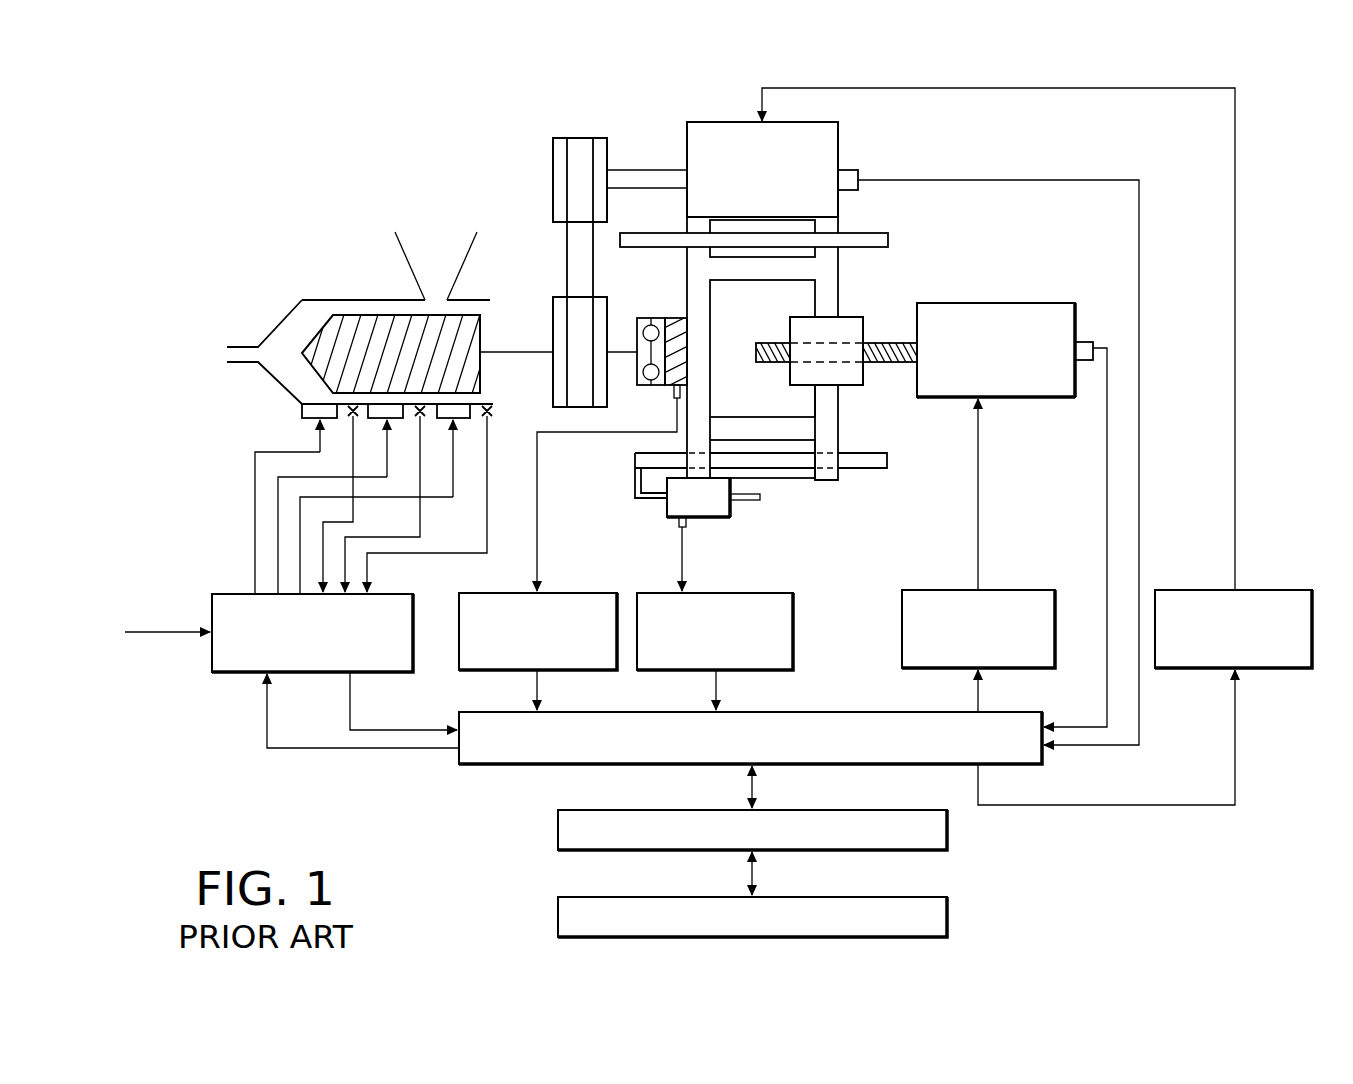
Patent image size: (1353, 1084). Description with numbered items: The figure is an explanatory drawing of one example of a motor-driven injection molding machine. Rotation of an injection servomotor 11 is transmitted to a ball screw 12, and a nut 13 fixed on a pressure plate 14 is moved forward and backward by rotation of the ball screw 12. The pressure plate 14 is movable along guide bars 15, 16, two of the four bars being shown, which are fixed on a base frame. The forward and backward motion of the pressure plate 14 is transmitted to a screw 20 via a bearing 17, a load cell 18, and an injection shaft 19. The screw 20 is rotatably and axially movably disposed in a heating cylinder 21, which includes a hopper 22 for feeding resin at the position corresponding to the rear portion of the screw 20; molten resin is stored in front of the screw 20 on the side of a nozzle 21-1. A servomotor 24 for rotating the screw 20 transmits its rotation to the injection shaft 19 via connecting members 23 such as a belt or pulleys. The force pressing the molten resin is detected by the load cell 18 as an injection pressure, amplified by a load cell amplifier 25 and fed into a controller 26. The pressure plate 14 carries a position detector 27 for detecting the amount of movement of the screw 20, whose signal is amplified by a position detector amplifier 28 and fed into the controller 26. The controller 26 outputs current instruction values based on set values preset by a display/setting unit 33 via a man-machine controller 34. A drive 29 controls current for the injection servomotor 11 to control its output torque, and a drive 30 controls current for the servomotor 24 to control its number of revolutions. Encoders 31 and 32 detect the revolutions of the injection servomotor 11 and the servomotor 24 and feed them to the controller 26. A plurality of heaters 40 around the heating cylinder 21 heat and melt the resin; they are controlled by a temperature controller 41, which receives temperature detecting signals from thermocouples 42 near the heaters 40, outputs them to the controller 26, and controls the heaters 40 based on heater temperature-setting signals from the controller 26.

The injection servomotor 11 is at (1003, 303).
The ball screw 12 is at (880, 343).
The nut 13 is at (846, 317).
The pressure plate 14 is at (840, 408).
The guide bar 15 is at (890, 240).
The guide bar 16 is at (889, 460).
The bearing 17 is at (637, 340).
The load cell 18 is at (672, 318).
The injection shaft 19 is at (518, 353).
The screw 20 is at (340, 302).
The heating cylinder 21 is at (265, 337).
The nozzle 21-1 is at (243, 363).
The hopper 22 is at (395, 245).
The connecting members 23 is at (553, 258).
The servomotor 24 is at (840, 136).
The load cell amplifier 25 is at (582, 593).
The controller 26 is at (818, 712).
The position detector 27 is at (715, 518).
The position detector amplifier 28 is at (770, 593).
The drive 29 is at (1018, 590).
The drive 30 is at (1278, 590).
The encoder 31 is at (1085, 342).
The encoder 32 is at (850, 192).
The display/setting unit 33 is at (948, 900).
The man-machine controller 34 is at (948, 826).
The heaters 40 is at (300, 416).
The temperature controller 41 is at (243, 672).
The thermocouples 42 is at (340, 419).